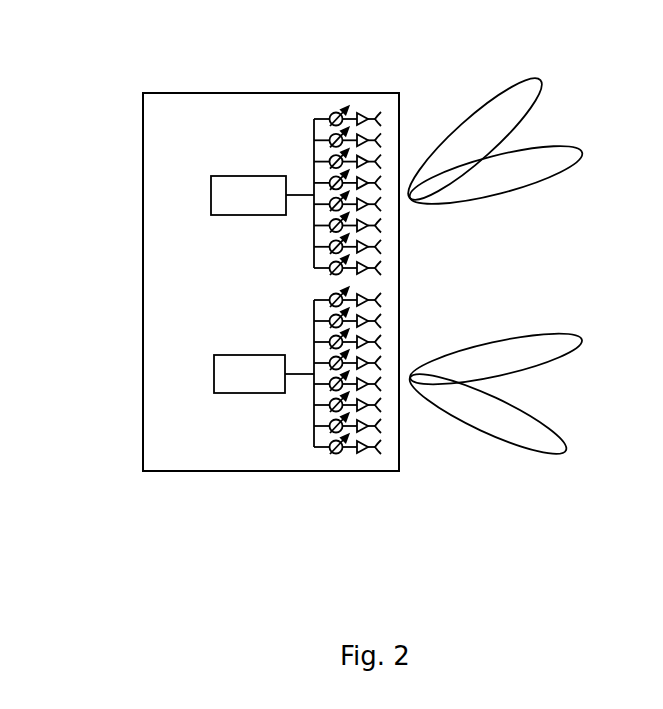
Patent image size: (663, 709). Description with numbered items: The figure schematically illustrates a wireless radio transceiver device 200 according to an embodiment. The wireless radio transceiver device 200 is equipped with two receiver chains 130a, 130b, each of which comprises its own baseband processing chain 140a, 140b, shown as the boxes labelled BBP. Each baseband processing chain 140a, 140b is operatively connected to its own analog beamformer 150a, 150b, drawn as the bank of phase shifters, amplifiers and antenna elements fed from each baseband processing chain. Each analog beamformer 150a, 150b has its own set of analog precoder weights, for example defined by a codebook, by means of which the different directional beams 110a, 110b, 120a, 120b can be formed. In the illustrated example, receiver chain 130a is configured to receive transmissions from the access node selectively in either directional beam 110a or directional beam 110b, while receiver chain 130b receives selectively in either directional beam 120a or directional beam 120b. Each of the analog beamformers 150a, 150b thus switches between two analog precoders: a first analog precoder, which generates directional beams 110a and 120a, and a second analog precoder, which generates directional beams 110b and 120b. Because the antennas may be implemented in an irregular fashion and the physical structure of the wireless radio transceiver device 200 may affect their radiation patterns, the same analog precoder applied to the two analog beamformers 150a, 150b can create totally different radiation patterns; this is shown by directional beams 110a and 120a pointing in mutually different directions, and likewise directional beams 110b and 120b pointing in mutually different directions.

The wireless radio transceiver device 200 is at (148, 262).
The receiver chain 130a is at (290, 157).
The receiver chain 130b is at (289, 411).
The baseband processing chain 140a is at (211, 195).
The baseband processing chain 140b is at (214, 372).
The analog beamformer 150a is at (313, 232).
The analog beamformer 150b is at (313, 312).
The directional beam 110a is at (493, 97).
The directional beam 110b is at (545, 178).
The directional beam 120a is at (531, 336).
The directional beam 120b is at (512, 447).